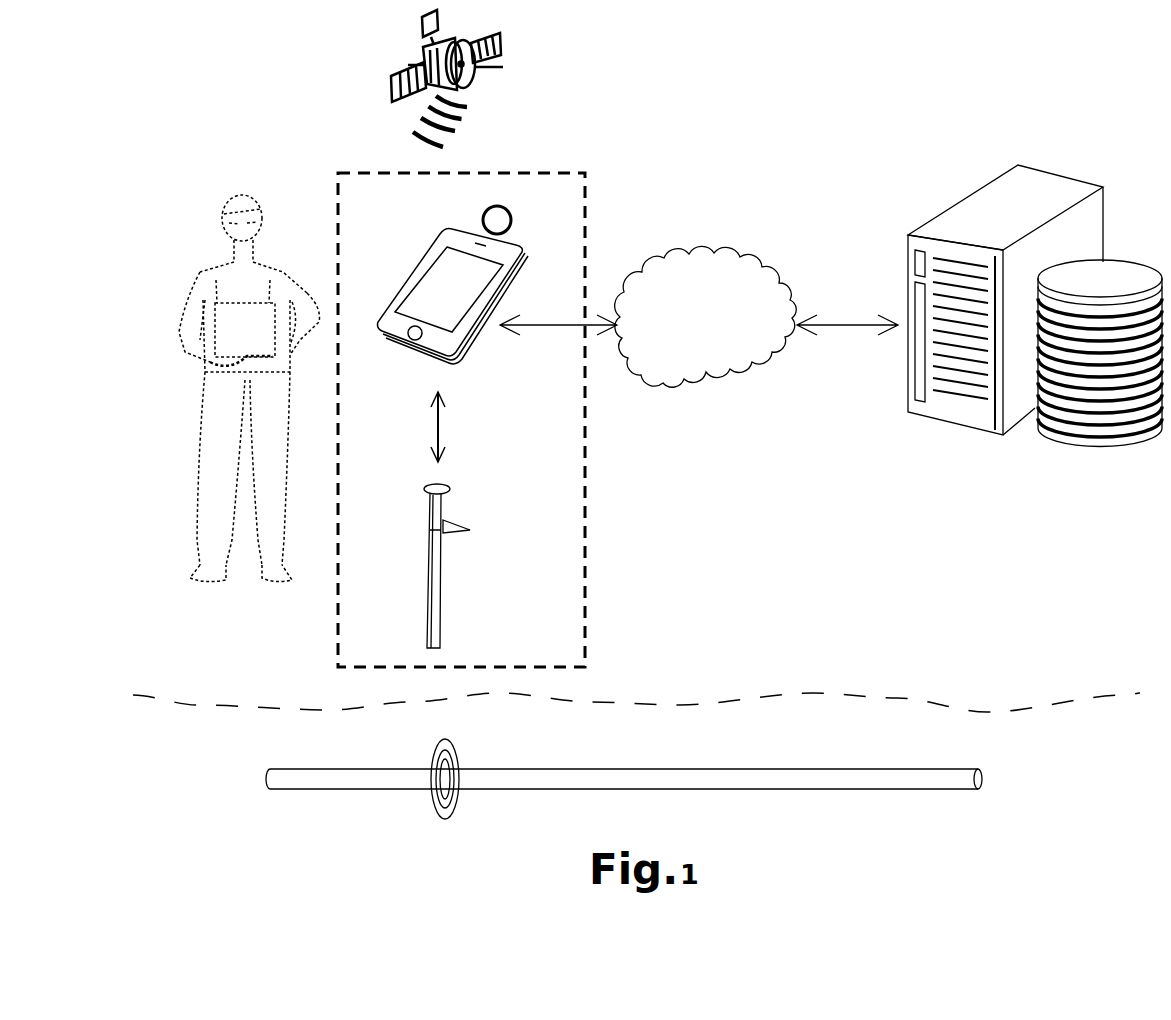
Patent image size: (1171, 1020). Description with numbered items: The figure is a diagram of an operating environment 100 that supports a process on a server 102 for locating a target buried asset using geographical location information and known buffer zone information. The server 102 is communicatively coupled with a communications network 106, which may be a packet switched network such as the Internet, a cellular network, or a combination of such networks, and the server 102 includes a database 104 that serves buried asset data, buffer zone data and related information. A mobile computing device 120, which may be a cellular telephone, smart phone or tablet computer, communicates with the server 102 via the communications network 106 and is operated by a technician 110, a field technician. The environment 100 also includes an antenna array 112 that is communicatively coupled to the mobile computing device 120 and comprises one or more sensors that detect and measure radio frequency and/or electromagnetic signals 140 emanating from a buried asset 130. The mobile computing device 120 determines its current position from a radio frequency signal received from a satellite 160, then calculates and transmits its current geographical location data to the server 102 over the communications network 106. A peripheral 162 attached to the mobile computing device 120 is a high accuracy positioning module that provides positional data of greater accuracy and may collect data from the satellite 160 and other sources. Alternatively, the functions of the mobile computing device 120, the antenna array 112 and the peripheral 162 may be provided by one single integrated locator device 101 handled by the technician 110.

The operating environment 100 is at (312, 184).
The single integrated locator device 101 is at (587, 518).
The server 102 is at (943, 422).
The database 104 is at (1100, 448).
The communications network 106 is at (706, 316).
The technician 110 is at (205, 585).
The antenna array 112 is at (439, 585).
The mobile computing device 120 is at (474, 230).
The buried asset 130 is at (893, 782).
The radio frequency and/or electromagnetic signals 140 is at (436, 815).
The satellite 160 is at (478, 85).
The peripheral 162 is at (512, 213).